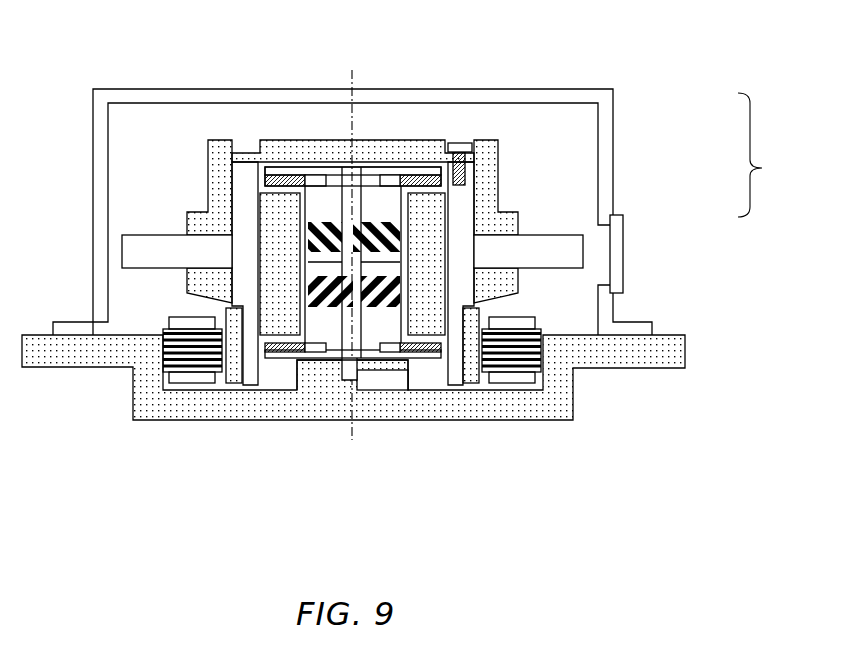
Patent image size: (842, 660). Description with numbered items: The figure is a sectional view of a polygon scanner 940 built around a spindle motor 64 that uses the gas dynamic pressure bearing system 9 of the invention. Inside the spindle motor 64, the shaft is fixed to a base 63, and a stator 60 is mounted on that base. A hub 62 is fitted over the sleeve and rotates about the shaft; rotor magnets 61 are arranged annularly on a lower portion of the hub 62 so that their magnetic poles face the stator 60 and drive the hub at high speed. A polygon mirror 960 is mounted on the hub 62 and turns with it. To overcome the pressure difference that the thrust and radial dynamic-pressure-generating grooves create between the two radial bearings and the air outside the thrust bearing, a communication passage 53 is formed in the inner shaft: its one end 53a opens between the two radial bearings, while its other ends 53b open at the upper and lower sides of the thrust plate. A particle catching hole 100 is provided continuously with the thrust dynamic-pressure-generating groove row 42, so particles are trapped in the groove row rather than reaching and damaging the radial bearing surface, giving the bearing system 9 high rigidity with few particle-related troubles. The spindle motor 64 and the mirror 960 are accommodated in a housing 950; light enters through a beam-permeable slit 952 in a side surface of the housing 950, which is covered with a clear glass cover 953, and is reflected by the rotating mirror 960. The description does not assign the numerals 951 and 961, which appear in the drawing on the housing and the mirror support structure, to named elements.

The gas dynamic pressure bearing system 9 is at (365, 162).
The thrust dynamic-pressure-generating groove row 42 is at (420, 172).
The communication passage 53 is at (336, 377).
The one end of the communication passage 53a is at (402, 264).
The other ends of the communication passage 53b is at (348, 177).
The stator 60 is at (485, 383).
The rotor magnets 61 is at (474, 381).
The hub 62 is at (242, 287).
The base 63 is at (565, 390).
The spindle motor 64 is at (345, 136).
The particle catching hole 100 is at (388, 178).
The polygon scanner 940 is at (619, 88).
The housing 950 is at (780, 155).
The inner cover 951 is at (600, 140).
The beam-permeable slit 952 is at (602, 242).
The clear glass cover 953 is at (618, 252).
The polygon mirror 960 is at (143, 243).
The bearing holder 961 is at (218, 188).